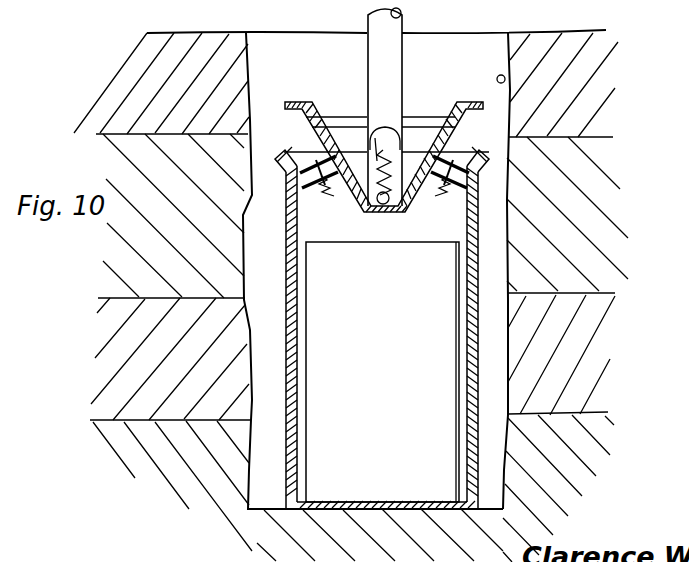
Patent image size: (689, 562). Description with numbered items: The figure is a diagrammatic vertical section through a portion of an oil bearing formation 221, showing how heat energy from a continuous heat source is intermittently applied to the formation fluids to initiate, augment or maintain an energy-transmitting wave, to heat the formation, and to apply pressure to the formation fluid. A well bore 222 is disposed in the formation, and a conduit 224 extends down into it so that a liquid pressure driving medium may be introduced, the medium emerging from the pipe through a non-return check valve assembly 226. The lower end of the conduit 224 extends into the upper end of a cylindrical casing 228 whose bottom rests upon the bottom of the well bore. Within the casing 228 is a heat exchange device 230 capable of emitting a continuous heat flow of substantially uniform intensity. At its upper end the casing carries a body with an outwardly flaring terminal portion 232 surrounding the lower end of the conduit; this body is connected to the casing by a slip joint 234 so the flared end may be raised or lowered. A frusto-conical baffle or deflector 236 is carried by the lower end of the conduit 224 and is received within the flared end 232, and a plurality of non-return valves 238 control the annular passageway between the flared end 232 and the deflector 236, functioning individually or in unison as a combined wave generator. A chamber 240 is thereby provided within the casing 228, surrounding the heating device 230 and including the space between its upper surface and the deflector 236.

The oil bearing formation 221 is at (240, 51).
The well bore 222 is at (505, 82).
The conduit 224 is at (393, 53).
The non-return check valve assembly 226 is at (411, 170).
The cylindrical casing 228 is at (286, 268).
The heat exchange device 230 is at (362, 494).
The outwardly flaring terminal portion 232 is at (481, 184).
The slip joint 234 is at (478, 233).
The frusto-conical baffle or deflector 236 is at (455, 127).
The non-return valves 238 is at (311, 168).
The chamber 240 is at (349, 229).